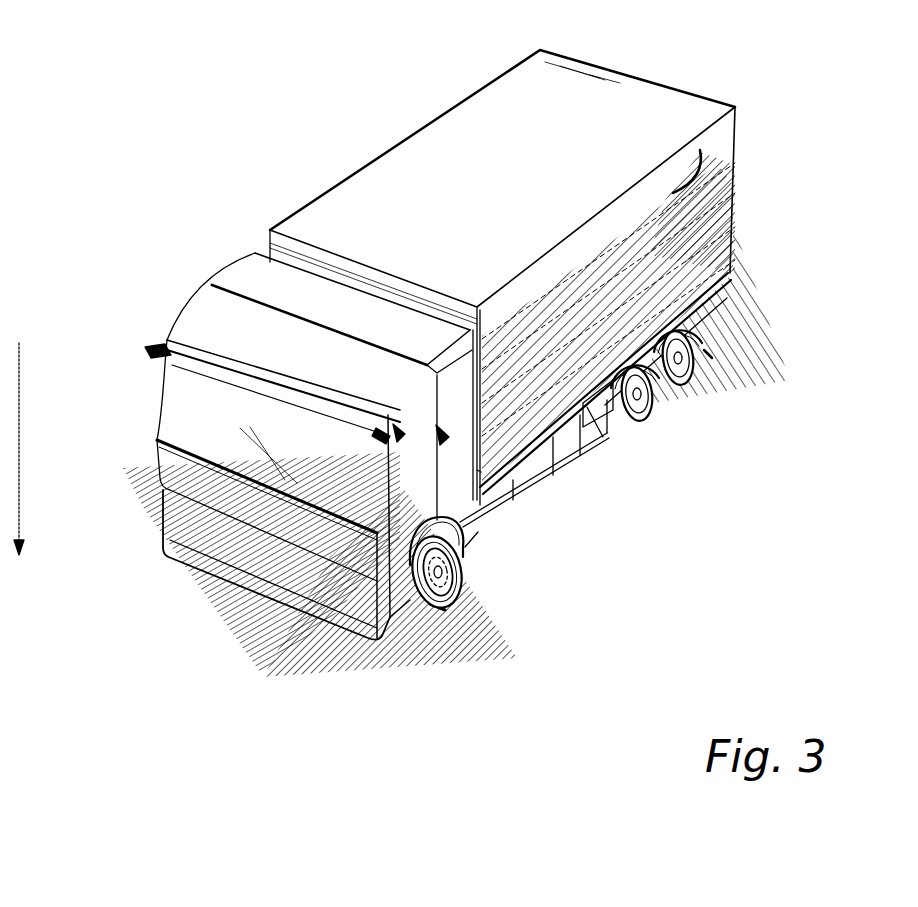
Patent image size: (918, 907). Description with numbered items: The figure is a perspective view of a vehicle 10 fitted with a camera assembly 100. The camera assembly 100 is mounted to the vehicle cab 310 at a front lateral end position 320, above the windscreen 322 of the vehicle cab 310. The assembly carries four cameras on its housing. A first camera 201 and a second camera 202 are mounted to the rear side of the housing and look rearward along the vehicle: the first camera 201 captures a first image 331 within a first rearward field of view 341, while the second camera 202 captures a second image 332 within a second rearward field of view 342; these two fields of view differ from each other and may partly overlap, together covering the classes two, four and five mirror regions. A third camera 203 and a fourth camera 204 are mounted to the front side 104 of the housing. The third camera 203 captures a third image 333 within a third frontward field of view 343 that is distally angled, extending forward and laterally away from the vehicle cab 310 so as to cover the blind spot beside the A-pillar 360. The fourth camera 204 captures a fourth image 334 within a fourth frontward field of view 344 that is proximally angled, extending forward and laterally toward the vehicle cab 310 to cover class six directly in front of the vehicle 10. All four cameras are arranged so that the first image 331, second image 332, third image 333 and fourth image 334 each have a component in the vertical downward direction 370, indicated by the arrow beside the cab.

The vehicle 10 is at (376, 80).
The camera assembly 100 is at (513, 473).
The front side 104 is at (372, 438).
The first camera 201 is at (545, 470).
The second camera 202 is at (443, 428).
The third camera 203 is at (507, 512).
The fourth camera 204 is at (360, 437).
The vehicle cab 310 is at (214, 310).
The front lateral end position 320 is at (400, 407).
The windscreen 322 is at (183, 403).
The first image 331 is at (707, 353).
The second image 332 is at (700, 183).
The third image 333 is at (440, 607).
The fourth image 334 is at (233, 575).
The first rearward field of view 341 is at (763, 352).
The second rearward field of view 342 is at (700, 137).
The third frontward field of view 343 is at (402, 643).
The fourth frontward field of view 344 is at (217, 512).
The A-pillar 360 is at (500, 535).
The vertical downward direction 370 is at (20, 397).